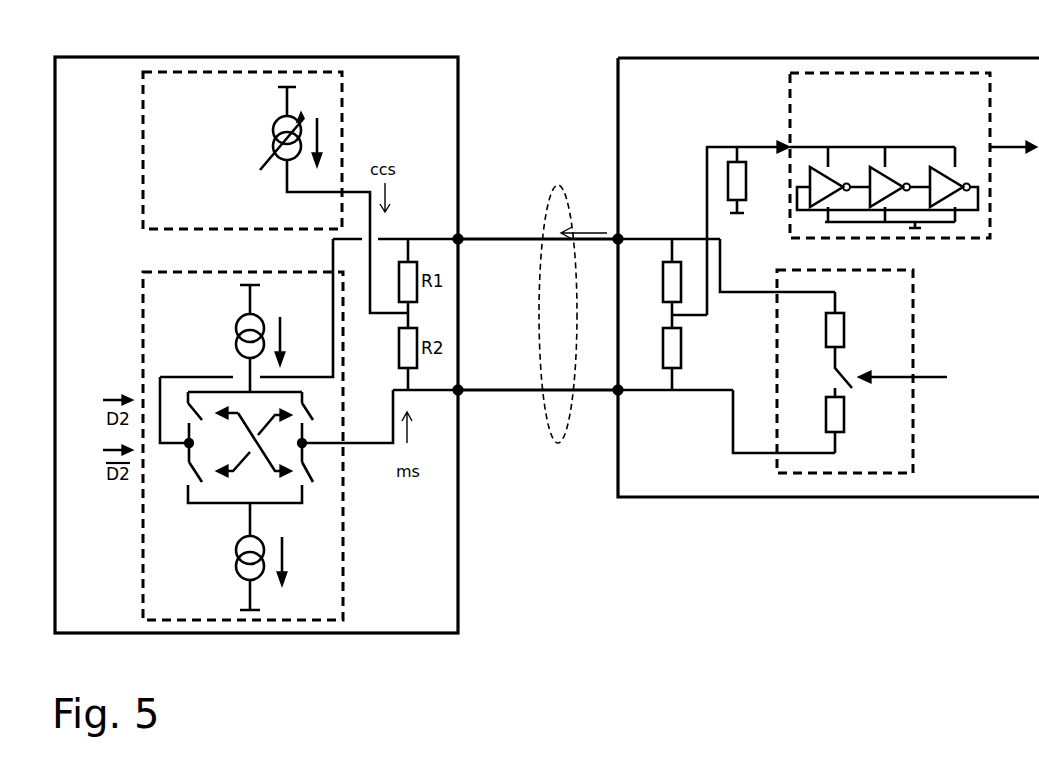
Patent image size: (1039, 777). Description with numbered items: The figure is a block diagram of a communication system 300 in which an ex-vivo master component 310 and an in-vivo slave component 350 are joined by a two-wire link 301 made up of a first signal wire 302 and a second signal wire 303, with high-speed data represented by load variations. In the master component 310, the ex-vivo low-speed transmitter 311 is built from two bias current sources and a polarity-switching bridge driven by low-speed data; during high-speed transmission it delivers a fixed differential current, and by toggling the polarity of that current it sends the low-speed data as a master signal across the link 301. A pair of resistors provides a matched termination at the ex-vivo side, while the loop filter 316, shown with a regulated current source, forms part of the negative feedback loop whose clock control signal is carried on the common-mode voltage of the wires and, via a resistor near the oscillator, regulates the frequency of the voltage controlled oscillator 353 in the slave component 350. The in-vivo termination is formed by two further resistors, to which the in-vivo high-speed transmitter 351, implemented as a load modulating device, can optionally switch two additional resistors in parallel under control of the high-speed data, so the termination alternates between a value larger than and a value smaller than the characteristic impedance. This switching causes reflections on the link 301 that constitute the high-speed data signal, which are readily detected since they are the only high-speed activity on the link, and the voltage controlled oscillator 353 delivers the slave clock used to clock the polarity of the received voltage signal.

The communication system 300 is at (538, 282).
The link 301 is at (558, 443).
The signal wire 302 is at (500, 239).
The signal wire 303 is at (500, 392).
The master component 310 is at (103, 93).
The ex-vivo LS-transmitter 311 is at (191, 340).
The loop filter 316 is at (206, 183).
The slave component 350 is at (686, 100).
The in-vivo HS-transmitter 351 is at (904, 335).
The voltage controlled oscillator 353 is at (834, 111).